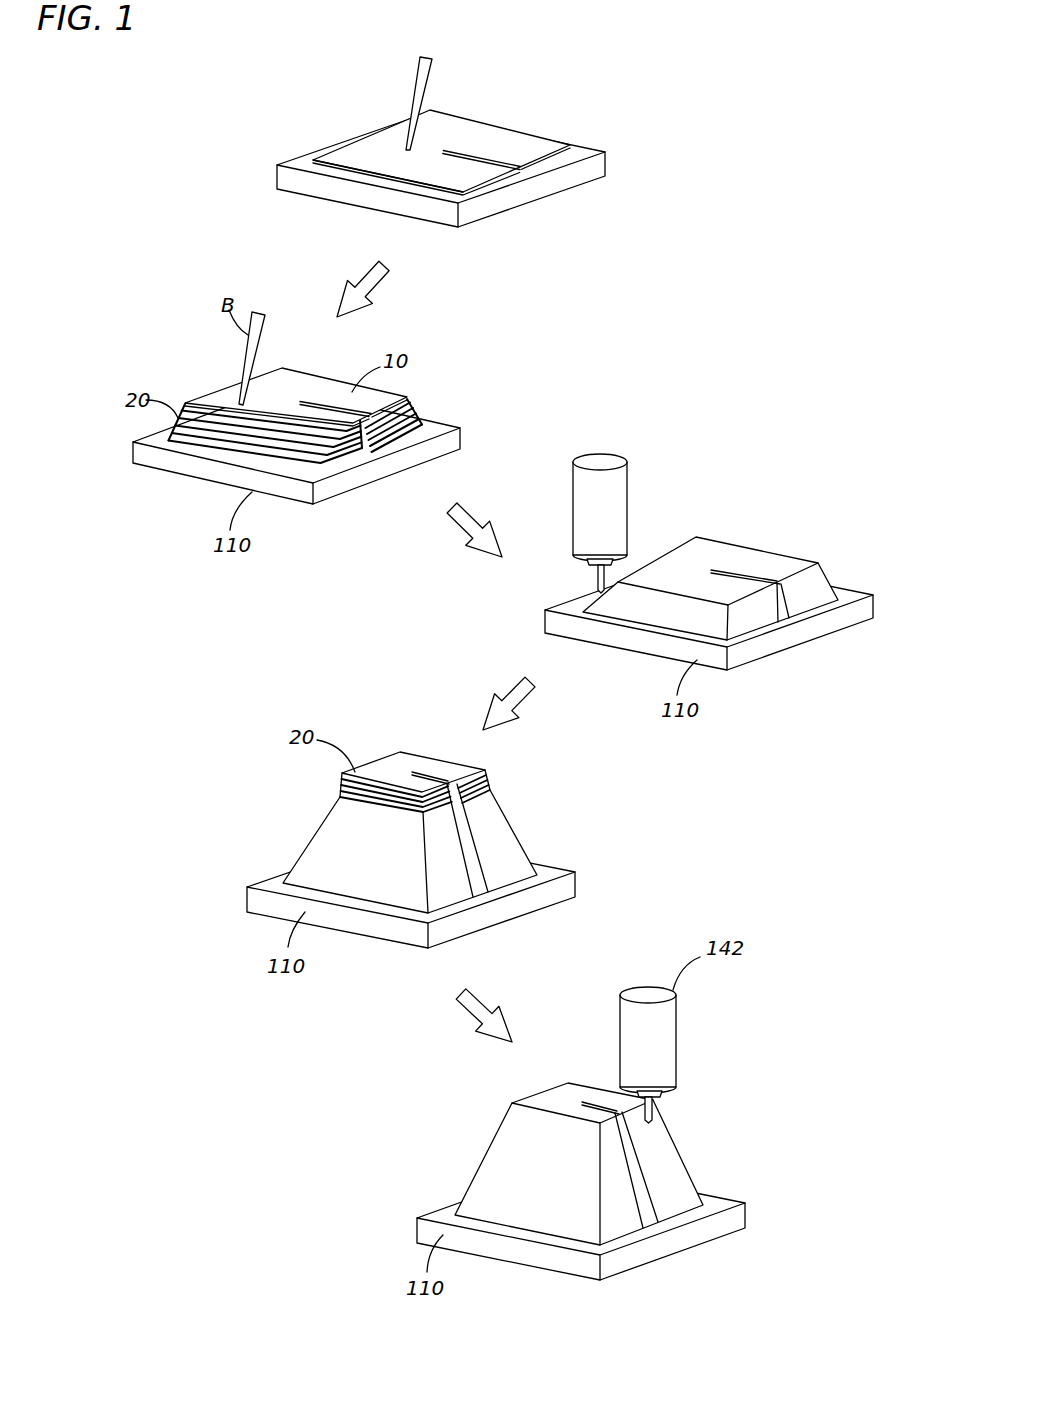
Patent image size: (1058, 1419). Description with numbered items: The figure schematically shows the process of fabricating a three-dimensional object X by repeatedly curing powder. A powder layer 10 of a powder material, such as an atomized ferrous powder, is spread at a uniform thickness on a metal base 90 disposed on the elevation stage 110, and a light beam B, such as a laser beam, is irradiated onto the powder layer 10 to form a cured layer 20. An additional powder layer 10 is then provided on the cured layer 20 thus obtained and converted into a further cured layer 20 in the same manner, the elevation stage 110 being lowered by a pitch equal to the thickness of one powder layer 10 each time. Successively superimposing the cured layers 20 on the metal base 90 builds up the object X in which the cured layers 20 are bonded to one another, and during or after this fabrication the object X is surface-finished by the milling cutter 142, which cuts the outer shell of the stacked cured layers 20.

The powder layer 10 is at (348, 146).
The cured layer 20 is at (313, 163).
The metal base 90 is at (168, 437).
The elevation stage 110 is at (523, 205).
The milling cutter 142 is at (595, 462).
The light beam B is at (413, 76).
The three-dimensional object X is at (498, 1145).